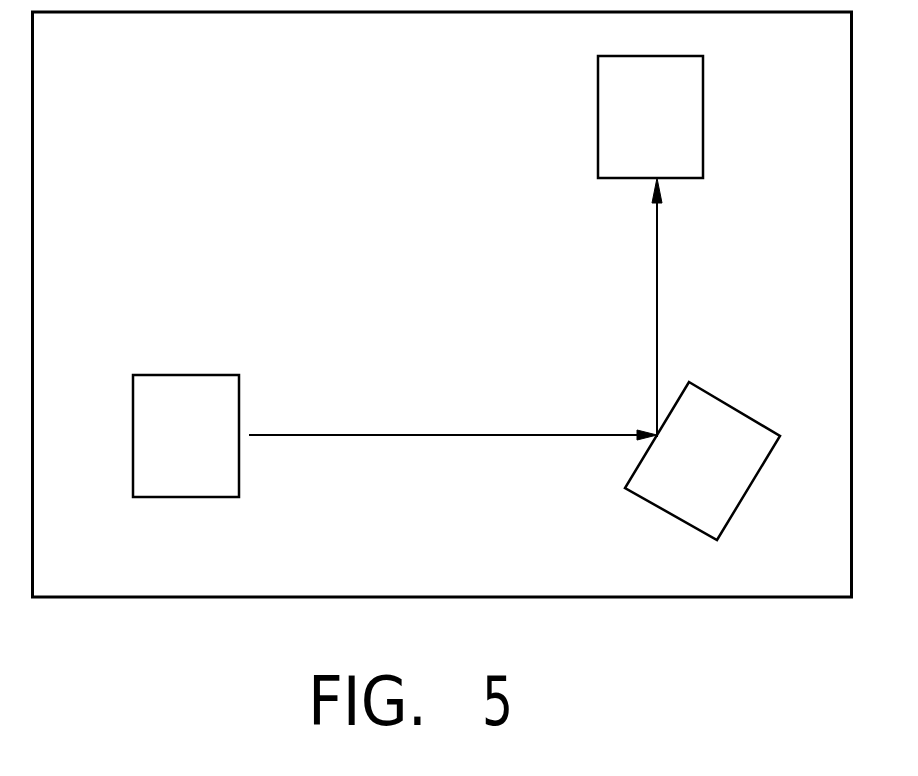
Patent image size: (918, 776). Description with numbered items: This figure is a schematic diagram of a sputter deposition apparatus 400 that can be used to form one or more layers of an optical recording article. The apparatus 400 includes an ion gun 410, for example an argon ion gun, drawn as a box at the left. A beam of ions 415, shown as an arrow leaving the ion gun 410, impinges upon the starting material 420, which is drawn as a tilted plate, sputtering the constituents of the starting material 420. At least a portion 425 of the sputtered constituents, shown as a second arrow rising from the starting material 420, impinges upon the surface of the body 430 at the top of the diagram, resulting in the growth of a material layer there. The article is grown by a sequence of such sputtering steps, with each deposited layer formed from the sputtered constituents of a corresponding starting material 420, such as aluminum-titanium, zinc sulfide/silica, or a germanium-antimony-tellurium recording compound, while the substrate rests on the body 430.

The sputter deposition apparatus 400 is at (193, 119).
The ion gun 410 is at (208, 435).
The beam of ions 415 is at (485, 435).
The starting material 420 is at (725, 468).
The portion of sputtered constituents 425 is at (657, 272).
The body 430 is at (677, 127).